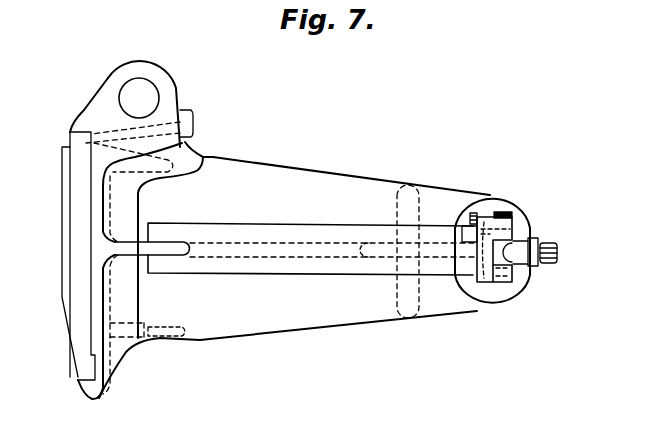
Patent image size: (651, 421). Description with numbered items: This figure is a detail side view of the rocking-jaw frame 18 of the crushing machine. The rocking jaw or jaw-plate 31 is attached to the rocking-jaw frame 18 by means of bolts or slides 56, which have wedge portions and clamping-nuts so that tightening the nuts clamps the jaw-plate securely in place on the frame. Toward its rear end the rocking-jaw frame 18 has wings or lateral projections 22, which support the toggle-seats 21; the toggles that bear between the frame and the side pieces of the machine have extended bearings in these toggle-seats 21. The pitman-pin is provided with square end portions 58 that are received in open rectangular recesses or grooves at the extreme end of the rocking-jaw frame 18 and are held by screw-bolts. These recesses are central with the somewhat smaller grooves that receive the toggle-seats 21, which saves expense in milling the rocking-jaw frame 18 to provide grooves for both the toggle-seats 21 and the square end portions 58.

The rocking-jaw frame 18 is at (288, 176).
The rocking jaw 31 is at (64, 256).
The bolts or slides 56 is at (117, 134).
The wings 22 is at (483, 223).
The toggle-seats 21 is at (500, 283).
The square end portions 58 is at (517, 242).